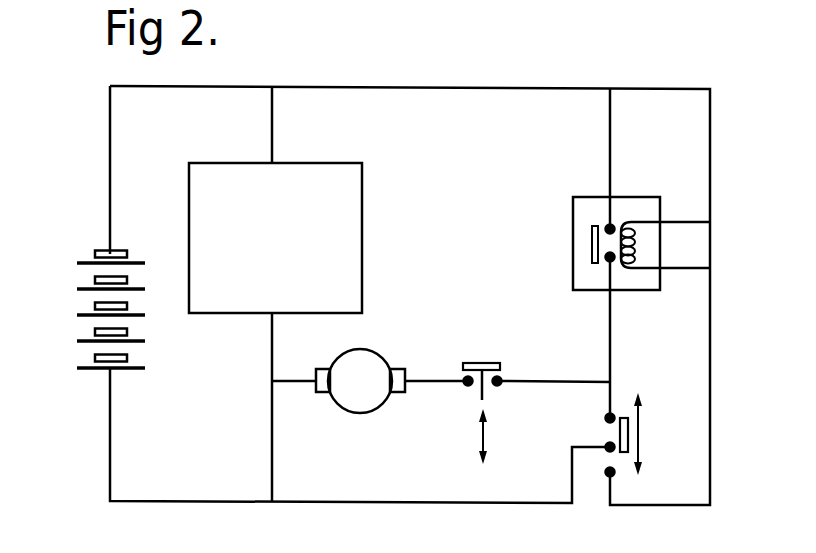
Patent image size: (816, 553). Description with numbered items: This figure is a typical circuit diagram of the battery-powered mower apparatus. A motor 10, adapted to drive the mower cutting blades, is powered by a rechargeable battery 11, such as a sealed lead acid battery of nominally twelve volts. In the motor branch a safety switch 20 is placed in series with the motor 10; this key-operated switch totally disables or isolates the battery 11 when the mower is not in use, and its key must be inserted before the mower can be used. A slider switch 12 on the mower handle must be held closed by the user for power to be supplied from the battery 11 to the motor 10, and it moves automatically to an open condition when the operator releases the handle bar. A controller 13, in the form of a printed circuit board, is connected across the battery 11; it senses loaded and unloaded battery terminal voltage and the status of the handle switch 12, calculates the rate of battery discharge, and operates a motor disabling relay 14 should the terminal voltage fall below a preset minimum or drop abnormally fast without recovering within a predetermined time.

The motor 10 is at (375, 398).
The rechargeable battery 11 is at (77, 368).
The slider switch 12 is at (668, 421).
The controller 13 is at (340, 243).
The motor disabling relay 14 is at (638, 211).
The safety switch 20 is at (486, 346).